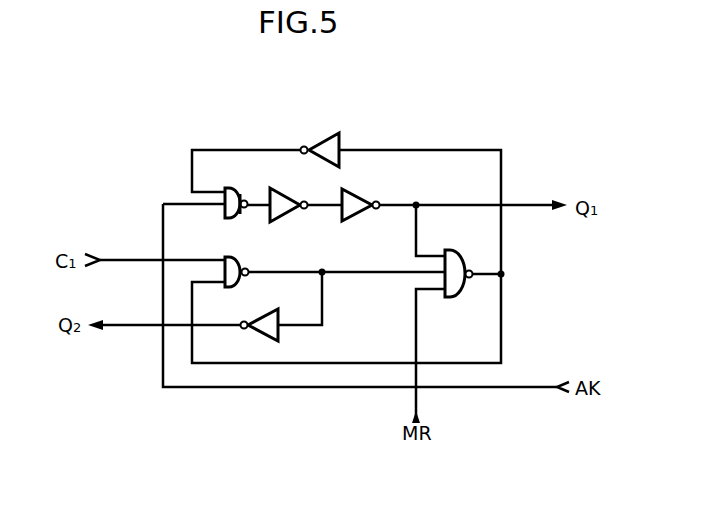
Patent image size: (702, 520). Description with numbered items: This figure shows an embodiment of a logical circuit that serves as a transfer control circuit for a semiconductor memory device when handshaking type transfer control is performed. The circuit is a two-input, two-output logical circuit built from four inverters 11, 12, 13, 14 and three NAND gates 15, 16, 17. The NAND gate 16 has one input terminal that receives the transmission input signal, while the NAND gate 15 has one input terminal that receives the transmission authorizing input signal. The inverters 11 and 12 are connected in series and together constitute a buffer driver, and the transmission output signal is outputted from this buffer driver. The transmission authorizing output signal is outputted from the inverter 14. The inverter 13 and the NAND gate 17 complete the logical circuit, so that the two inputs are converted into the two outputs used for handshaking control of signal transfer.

The inverter 11 is at (293, 210).
The inverter 12 is at (363, 210).
The inverter 13 is at (312, 144).
The inverter 14 is at (257, 337).
The NAND gate 15 is at (233, 188).
The NAND gate 16 is at (234, 218).
The NAND gate 17 is at (458, 263).